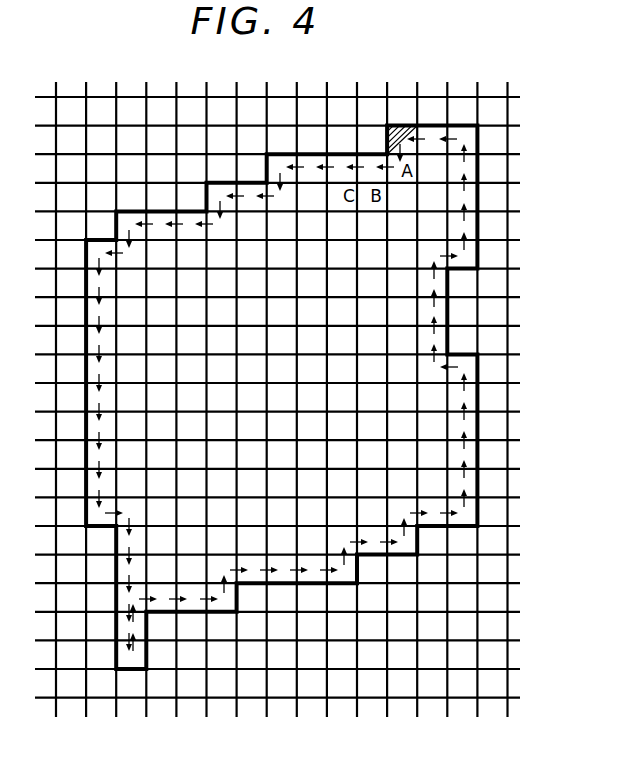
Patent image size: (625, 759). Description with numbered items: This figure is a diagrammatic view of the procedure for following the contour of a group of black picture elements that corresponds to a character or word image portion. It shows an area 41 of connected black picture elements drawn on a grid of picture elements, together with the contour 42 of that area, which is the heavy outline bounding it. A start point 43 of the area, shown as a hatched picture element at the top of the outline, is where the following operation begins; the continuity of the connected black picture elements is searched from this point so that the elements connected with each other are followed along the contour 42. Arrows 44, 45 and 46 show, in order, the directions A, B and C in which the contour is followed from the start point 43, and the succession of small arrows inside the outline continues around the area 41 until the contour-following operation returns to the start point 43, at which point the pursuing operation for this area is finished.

The area of connected black picture elements 41 is at (403, 203).
The contour 42 is at (482, 393).
The start point 43 is at (421, 127).
The arrow 44 is at (392, 146).
The arrow 45 is at (383, 166).
The arrow 46 is at (354, 166).